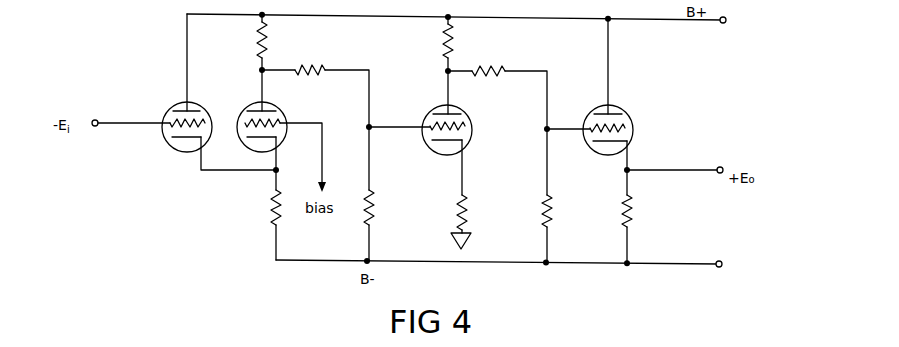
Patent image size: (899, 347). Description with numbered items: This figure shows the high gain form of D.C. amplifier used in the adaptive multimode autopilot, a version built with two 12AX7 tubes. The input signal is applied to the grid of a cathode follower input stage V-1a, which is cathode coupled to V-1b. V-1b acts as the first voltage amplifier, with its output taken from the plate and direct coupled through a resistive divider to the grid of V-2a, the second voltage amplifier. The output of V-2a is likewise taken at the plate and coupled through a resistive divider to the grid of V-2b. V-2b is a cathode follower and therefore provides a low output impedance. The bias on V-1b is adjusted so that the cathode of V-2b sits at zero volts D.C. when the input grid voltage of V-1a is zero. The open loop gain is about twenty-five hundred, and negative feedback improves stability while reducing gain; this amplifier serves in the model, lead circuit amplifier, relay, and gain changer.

The cathode follower input stage V-1a is at (174, 83).
The first voltage amplifier V-1b is at (256, 130).
The second voltage amplifier V-2a is at (436, 123).
The cathode follower V-2b is at (598, 124).